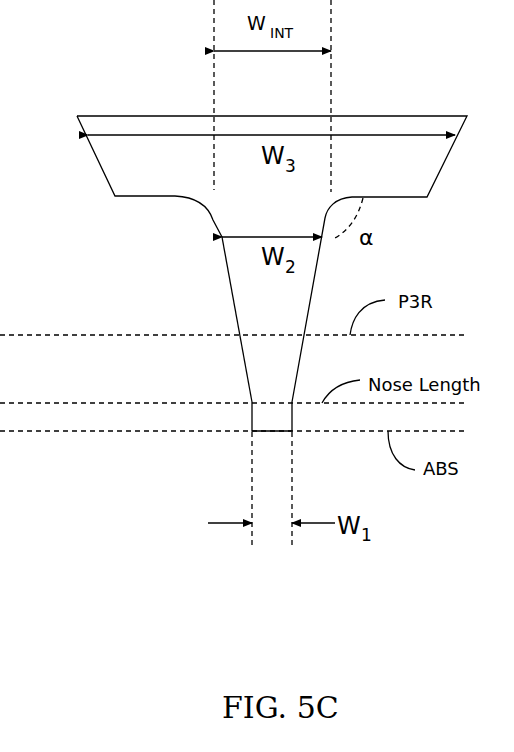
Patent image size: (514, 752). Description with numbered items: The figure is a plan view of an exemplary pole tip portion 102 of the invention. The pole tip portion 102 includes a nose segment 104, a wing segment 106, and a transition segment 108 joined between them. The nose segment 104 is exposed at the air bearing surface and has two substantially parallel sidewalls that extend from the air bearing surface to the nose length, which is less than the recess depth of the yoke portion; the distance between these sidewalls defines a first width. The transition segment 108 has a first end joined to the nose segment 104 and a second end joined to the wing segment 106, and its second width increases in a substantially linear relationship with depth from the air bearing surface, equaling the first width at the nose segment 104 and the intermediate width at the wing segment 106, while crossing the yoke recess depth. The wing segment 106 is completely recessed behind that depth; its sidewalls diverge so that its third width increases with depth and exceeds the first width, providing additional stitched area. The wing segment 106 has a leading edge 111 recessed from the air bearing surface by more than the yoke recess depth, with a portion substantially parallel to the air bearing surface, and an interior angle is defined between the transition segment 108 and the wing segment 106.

The pole tip portion 102 is at (318, 116).
The nose segment 104 is at (263, 419).
The wing segment 106 is at (127, 163).
The transition segment 108 is at (233, 259).
The leading edge 111 is at (175, 200).